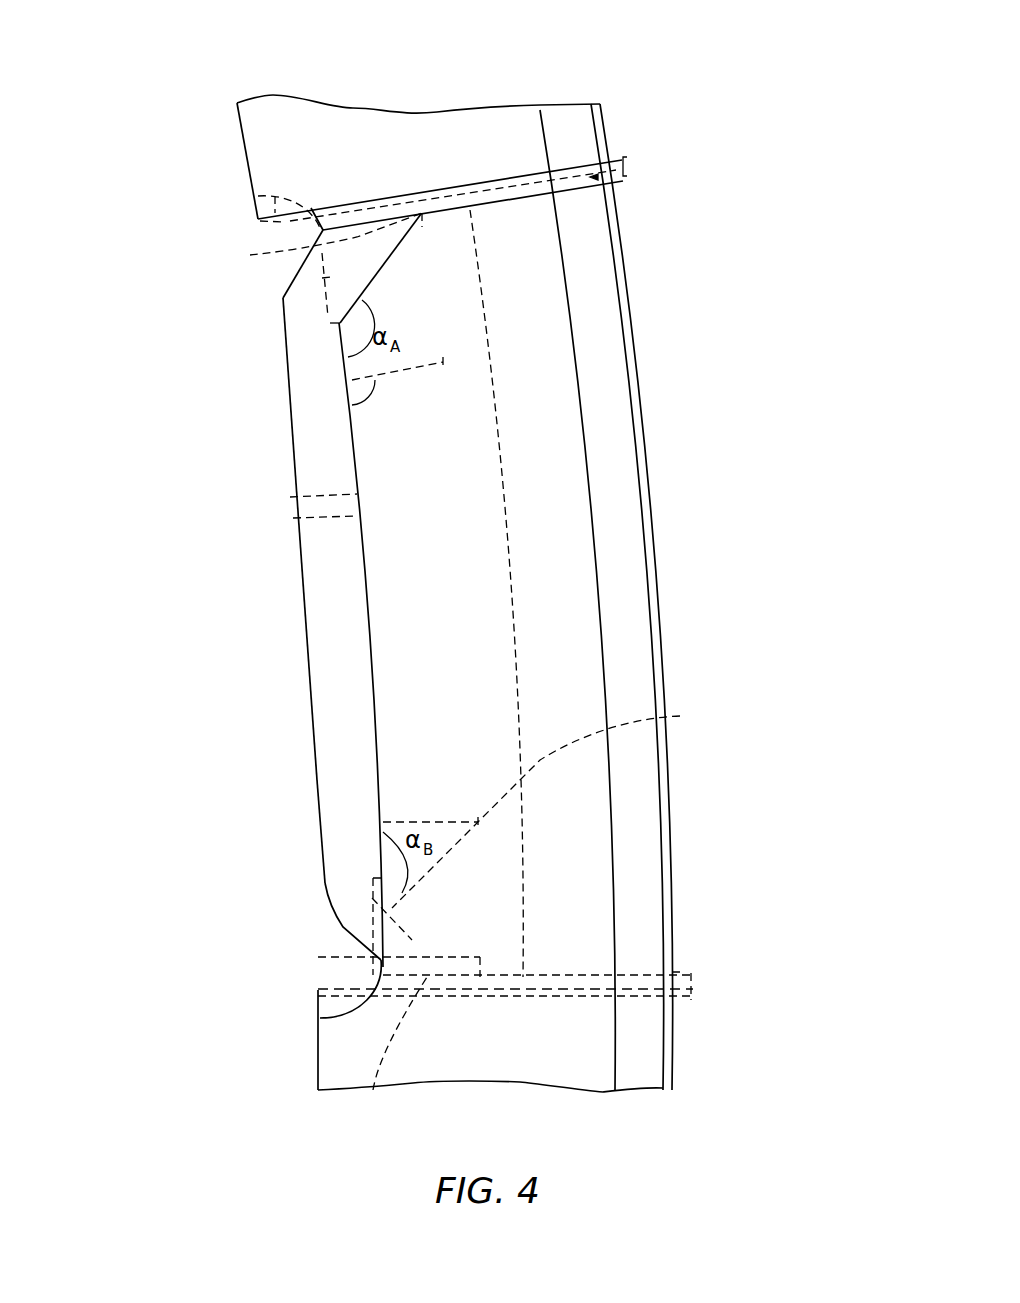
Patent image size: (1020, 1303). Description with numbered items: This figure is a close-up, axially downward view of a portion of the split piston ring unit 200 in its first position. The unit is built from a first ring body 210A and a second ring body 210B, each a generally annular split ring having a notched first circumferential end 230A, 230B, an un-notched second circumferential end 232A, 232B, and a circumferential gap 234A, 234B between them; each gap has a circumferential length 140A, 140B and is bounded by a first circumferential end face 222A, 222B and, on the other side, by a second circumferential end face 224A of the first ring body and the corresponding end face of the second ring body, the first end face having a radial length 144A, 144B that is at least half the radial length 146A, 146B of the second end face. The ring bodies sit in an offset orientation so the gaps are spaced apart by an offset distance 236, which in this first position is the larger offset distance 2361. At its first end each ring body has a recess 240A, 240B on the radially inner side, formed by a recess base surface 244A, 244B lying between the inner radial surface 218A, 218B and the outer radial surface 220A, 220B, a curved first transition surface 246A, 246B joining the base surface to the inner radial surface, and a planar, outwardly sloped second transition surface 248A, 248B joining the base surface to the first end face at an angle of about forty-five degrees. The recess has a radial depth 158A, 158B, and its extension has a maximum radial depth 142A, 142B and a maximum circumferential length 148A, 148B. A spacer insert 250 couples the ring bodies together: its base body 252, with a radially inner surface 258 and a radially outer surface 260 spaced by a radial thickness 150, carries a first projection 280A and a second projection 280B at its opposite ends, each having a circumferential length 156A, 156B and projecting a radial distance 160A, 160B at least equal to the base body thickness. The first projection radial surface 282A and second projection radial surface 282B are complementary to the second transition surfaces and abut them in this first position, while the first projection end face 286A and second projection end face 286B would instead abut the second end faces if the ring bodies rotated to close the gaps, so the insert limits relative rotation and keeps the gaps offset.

The split piston ring unit 200 is at (130, 99).
The inner radial surface 218A is at (160, 161).
The inner radial surface 218B is at (241, 128).
The first projection end face 286A is at (377, 200).
The first circumferential end face 222A is at (493, 180).
The second circumferential end 232A is at (614, 121).
The circumferential gap 234A is at (615, 162).
The circumferential length of the gap 140A is at (627, 174).
The first circumferential end 230A is at (630, 228).
The second circumferential end face 224A is at (520, 198).
The radial length of the first end face 144A is at (440, 217).
The second transition surface 248A is at (566, 281).
The first projection radial surface 282A is at (383, 270).
The outer radial surface 220A is at (704, 597).
The outer radial surface 220B is at (641, 421).
The first transition surface 246B is at (293, 220).
The radial length of the second end face 146A is at (293, 252).
The maximum radial depth of the recess extension 142A is at (287, 262).
The first projection 280A is at (283, 297).
The circumferential distance 148A is at (228, 415).
The circumferential length of the projection 156A is at (325, 290).
The radial distance 160A is at (352, 381).
The spacer insert 250 is at (281, 462).
The radial depth of the recess 158A is at (241, 485).
The radial depth of the recess 158B is at (313, 497).
The radial thickness of the base body 150 is at (315, 516).
The base body 252 is at (315, 563).
The recess base surface 244A is at (602, 645).
The recess base surface 244B is at (602, 645).
The radially outer surface 260 is at (368, 598).
The offset distance 236 is at (334, 650).
The offset distance in the first position 2361 is at (510, 667).
The radially inner surface 258 is at (312, 708).
The second transition surface 248B is at (610, 806).
The second projection radial surface 282B is at (680, 716).
The radial distance 160B is at (408, 818).
The circumferential distance 148B is at (254, 839).
The circumferential length of the projection 156B is at (373, 878).
The second projection 280B is at (480, 975).
The maximum radial depth of the recess extension 142B is at (362, 957).
The recess 240A is at (247, 928).
The recess 240B is at (337, 947).
The radial length of the second end face 146B is at (345, 990).
The second ring body 210B is at (309, 994).
The first transition surface 246A is at (350, 1015).
The first ring body 210A is at (341, 1081).
The second projection end face 286B is at (373, 1092).
The radial length of the first end face 144B is at (520, 980).
The first circumferential end face 222B is at (560, 980).
The second circumferential end 232B is at (686, 1048).
The circumferential gap 234B is at (656, 988).
The circumferential length of the gap 140B is at (692, 979).
The first circumferential end 230B is at (684, 910).